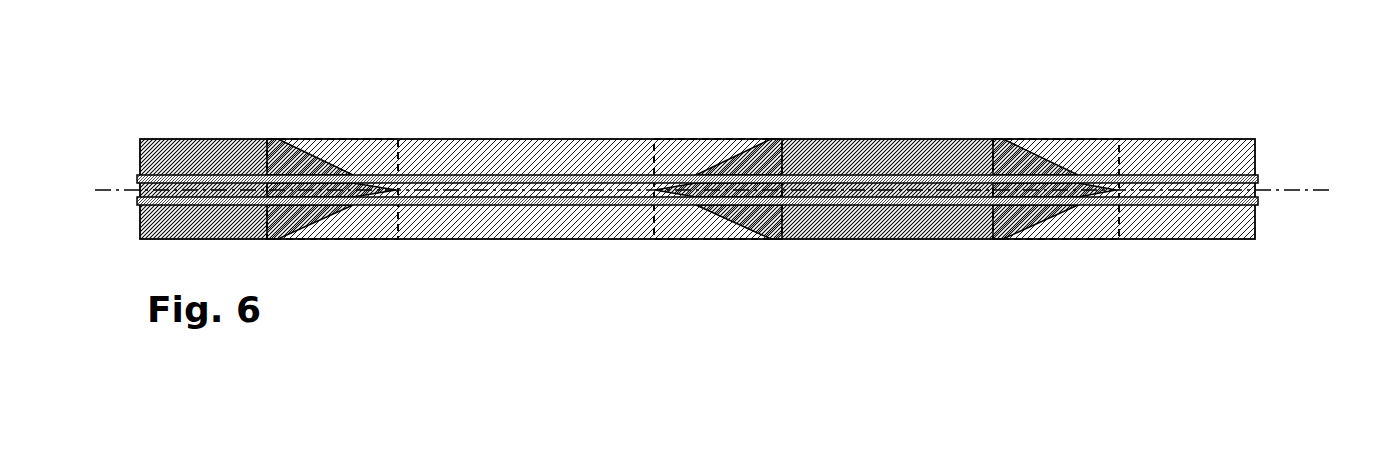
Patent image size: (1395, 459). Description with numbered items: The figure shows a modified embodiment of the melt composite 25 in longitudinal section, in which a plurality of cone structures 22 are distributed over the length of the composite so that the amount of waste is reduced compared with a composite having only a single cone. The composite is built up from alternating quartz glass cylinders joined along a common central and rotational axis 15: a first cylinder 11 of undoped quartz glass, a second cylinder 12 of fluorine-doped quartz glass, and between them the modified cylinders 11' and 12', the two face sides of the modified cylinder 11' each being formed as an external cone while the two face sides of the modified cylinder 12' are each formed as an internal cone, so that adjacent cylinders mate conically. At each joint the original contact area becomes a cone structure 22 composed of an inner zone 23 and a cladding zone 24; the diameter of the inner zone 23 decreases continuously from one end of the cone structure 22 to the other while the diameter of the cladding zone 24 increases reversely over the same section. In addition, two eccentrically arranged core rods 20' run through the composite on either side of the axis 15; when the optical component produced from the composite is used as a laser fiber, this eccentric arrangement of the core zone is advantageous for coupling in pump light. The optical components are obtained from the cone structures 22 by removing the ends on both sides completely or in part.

The first cylinder 11 is at (203, 152).
The modified cylinder 11' is at (887, 231).
The second cylinder 12 is at (1187, 152).
The modified cylinder 12' is at (526, 231).
The central and rotational axis 15 is at (1316, 188).
The eccentrically arranged core rod 20' is at (730, 192).
The cone structure 22 is at (694, 250).
The inner zone 23 is at (743, 167).
The cladding zone 24 is at (349, 153).
The melt composite 25 is at (923, 126).